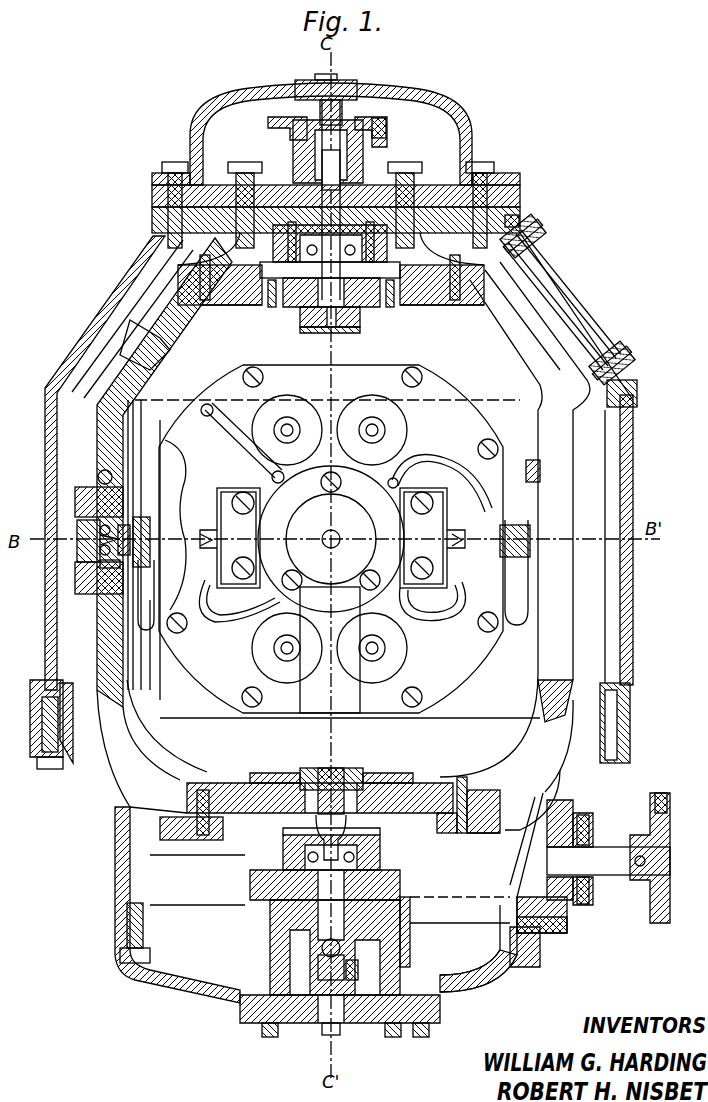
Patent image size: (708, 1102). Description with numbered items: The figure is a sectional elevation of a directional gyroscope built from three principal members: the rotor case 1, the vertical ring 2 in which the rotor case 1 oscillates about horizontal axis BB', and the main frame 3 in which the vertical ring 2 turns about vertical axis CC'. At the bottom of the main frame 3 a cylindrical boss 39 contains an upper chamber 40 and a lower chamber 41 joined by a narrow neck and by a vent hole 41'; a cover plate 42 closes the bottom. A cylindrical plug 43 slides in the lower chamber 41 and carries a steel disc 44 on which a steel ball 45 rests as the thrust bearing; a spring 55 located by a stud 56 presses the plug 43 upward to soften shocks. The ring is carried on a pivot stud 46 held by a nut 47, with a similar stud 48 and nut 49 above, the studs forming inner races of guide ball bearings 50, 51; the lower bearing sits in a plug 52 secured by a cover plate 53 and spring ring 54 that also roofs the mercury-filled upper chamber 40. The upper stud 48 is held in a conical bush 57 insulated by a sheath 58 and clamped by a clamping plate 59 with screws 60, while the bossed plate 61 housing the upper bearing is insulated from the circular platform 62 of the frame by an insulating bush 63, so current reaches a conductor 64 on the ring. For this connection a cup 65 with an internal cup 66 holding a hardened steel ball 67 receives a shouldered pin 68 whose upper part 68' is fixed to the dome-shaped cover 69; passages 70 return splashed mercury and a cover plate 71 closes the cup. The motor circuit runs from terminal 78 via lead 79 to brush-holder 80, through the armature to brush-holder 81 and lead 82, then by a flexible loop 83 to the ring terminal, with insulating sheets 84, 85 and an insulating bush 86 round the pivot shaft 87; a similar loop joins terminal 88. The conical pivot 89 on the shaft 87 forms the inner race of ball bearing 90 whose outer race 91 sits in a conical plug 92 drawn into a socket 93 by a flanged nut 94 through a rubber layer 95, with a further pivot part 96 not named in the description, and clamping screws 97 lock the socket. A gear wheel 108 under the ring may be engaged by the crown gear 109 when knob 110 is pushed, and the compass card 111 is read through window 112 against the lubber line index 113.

The rotor case 1 is at (255, 690).
The vertical ring 2 is at (480, 758).
The main frame 3 is at (545, 795).
The cylindrical boss 39 is at (305, 935).
The upper chamber 40 is at (300, 915).
The lower chamber 41 is at (324, 1046).
The vent hole 41' is at (445, 1042).
The cover plate 42 is at (280, 1010).
The cylindrical plug 43 is at (245, 985).
The steel disc 44 is at (470, 985).
The steel ball 45 is at (412, 940).
The pivot stud 46 is at (335, 800).
The nut 47 is at (315, 768).
The stud 48 is at (350, 318).
The nut 49 is at (308, 330).
The guide ball bearing 50 is at (290, 862).
The guide ball bearing 51 is at (215, 225).
The plug 52 is at (252, 895).
The cover plate 53 is at (290, 845).
The spring ring 54 is at (275, 776).
The spring 55 is at (345, 1000).
The stud 56 is at (330, 1005).
The bush 57 is at (280, 312).
The sheath 58 is at (280, 250).
The clamping plate 59 is at (497, 195).
The screws 60 is at (400, 285).
The bossed plate 61 is at (165, 172).
The circular platform 62 is at (528, 232).
The insulating bush 63 is at (505, 212).
The conductor 64 is at (185, 325).
The cup 65 is at (386, 140).
The internal cup 66 is at (300, 160).
The hardened steel ball 67 is at (315, 170).
The pin 68 is at (345, 128).
The upper part of pin 68' is at (383, 92).
The dome-shaped cover 69 is at (345, 84).
The passages 70 is at (385, 150).
The cover plate 71 is at (285, 118).
The terminal 78 is at (498, 505).
The lead 79 is at (420, 455).
The brush-holder 80 is at (428, 582).
The brush-holder 81 is at (235, 535).
The lead 82 is at (212, 405).
The loop 83 is at (158, 650).
The insulating sheet 84 is at (90, 745).
The insulating sheet 85 is at (150, 670).
The insulating bush 86 is at (152, 610).
The pivot shaft 87 is at (230, 620).
The terminal 88 is at (540, 470).
The conical pivot 89 is at (98, 530).
The ball bearing 90 is at (80, 565).
The outer race 91 is at (85, 500).
The conical plug 92 is at (105, 566).
The socket 93 is at (100, 595).
The flanged nut 94 is at (100, 545).
The rubber layer 95 is at (133, 567).
The collar 96 is at (118, 528).
The clamping screws 97 is at (100, 472).
The gear wheel 108 is at (490, 834).
The crown gear 109 is at (555, 935).
The knob 110 is at (652, 915).
The card 111 is at (572, 330).
The window 112 is at (580, 296).
The lubber line index 113 is at (530, 270).